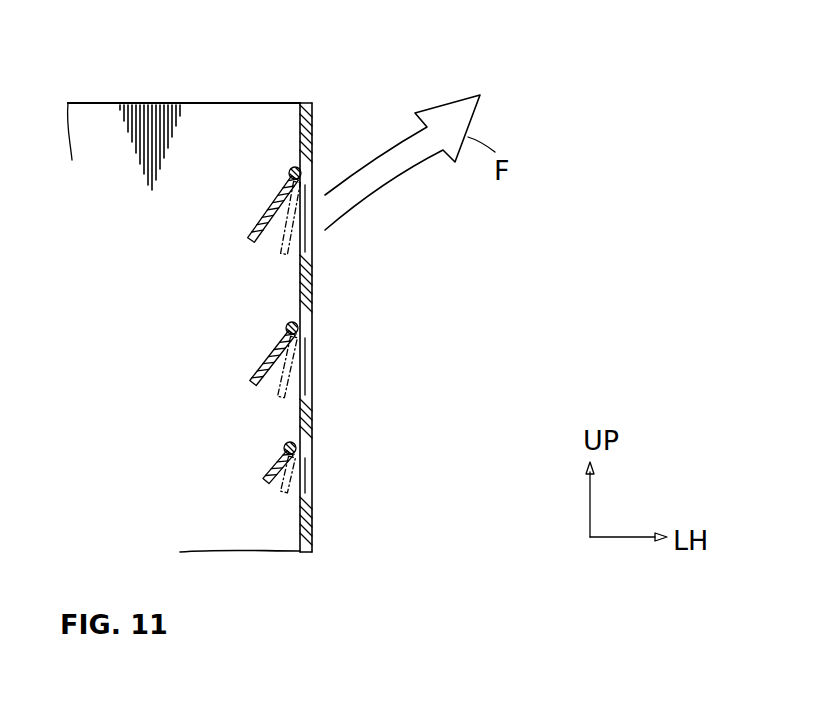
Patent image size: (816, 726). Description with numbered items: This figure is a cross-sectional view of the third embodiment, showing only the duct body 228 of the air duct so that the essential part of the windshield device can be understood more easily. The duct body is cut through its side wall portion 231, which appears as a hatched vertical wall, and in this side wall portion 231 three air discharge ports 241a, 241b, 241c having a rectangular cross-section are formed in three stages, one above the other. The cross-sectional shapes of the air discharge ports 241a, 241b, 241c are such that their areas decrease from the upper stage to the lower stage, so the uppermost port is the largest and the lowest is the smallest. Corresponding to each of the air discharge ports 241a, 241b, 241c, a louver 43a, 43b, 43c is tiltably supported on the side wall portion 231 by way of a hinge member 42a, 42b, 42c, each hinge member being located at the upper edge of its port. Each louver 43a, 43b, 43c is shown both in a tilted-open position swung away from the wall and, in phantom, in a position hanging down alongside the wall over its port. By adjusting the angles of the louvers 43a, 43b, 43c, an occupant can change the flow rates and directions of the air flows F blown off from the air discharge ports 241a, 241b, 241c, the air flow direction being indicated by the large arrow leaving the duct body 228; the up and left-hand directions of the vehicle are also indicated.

The duct body 228 is at (230, 102).
The side wall portion 231 is at (313, 131).
The hinge member 42a is at (290, 174).
The louver 43a is at (250, 224).
The air discharge port 241a is at (307, 243).
The hinge member 42b is at (287, 330).
The louver 43b is at (270, 373).
The air discharge port 241b is at (304, 385).
The hinge member 42c is at (285, 450).
The louver 43c is at (272, 484).
The air discharge port 241c is at (303, 484).